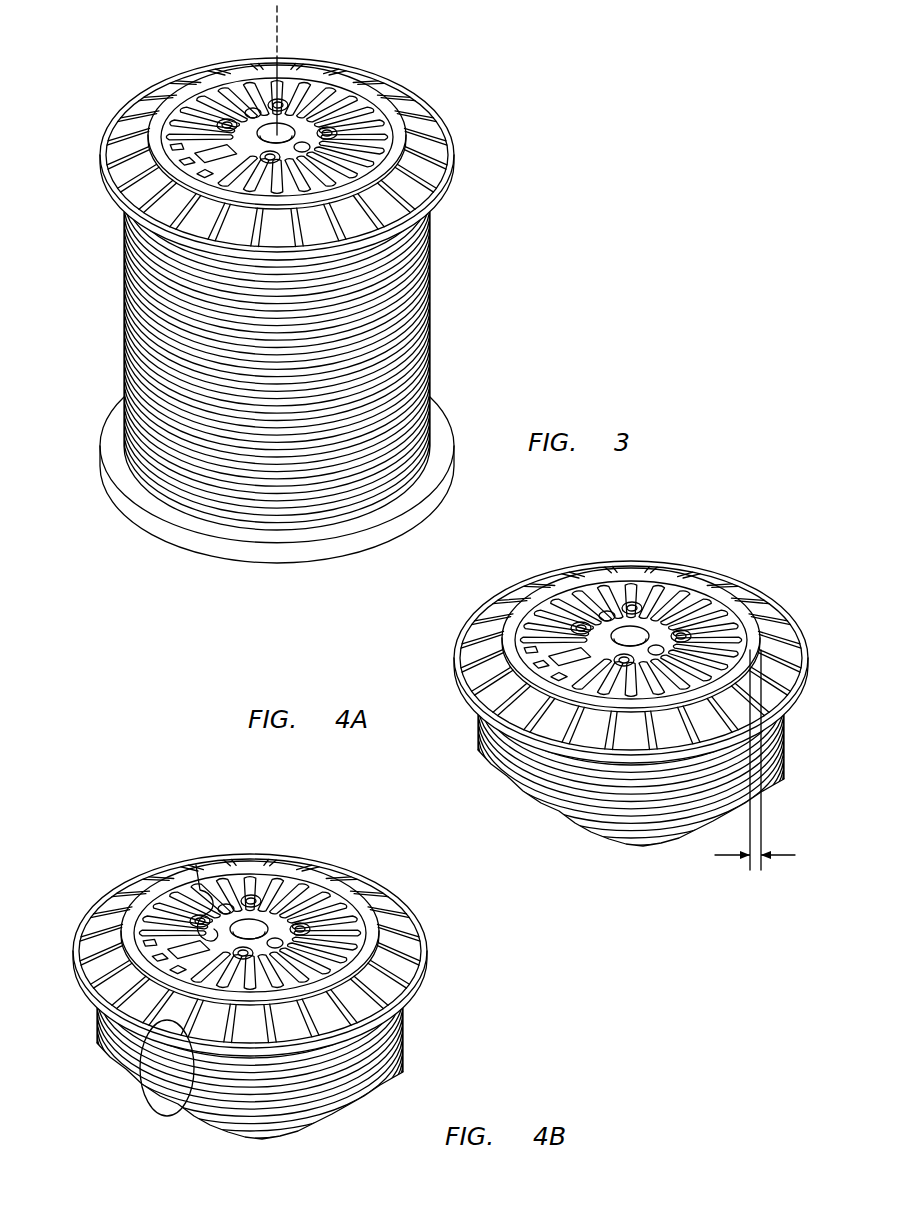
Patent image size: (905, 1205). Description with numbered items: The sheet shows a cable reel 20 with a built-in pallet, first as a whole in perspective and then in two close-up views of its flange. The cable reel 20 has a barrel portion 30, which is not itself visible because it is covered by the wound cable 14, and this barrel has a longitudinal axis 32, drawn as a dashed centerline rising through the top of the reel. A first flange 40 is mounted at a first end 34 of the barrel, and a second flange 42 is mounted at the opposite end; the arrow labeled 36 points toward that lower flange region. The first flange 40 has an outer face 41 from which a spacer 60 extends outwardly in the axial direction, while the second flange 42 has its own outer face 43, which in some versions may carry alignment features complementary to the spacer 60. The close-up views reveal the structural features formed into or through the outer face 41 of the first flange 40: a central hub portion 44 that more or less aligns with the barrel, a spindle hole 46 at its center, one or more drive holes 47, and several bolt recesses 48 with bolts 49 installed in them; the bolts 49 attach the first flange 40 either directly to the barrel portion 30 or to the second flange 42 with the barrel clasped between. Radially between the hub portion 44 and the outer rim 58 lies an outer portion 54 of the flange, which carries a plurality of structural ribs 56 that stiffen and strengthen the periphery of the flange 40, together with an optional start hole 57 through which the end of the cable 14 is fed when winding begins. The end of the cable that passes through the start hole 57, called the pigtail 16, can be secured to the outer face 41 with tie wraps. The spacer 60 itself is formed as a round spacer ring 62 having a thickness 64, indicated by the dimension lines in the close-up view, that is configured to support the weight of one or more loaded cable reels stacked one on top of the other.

In FIG. 3, the cable 14 is at (122, 340).
In FIG. 4A, the cable 14 is at (478, 750).
In FIG. 4B, the cable 14 is at (97, 1040).
In FIG. 4B, the pigtail 16 is at (196, 865).
In FIG. 3, the cable reel 20 is at (512, 93).
In FIG. 3, the barrel portion 30 is at (441, 303).
In FIG. 3, the longitudinal axis 32 is at (275, 24).
In FIG. 3, the first end 34 is at (471, 214).
In FIG. 3, the second flange 36 is at (470, 408).
In FIG. 3, the first flange 40 is at (100, 176).
In FIG. 4A, the first flange 40 is at (773, 602).
In FIG. 4B, the first flange 40 is at (390, 896).
In FIG. 3, the outer face 41 is at (429, 128).
In FIG. 3, the second flange 42 is at (100, 455).
In FIG. 3, the outer face 43 is at (138, 535).
In FIG. 4A, the central hub portion 44 is at (591, 605).
In FIG. 4B, the central hub portion 44 is at (230, 903).
In FIG. 4A, the spindle hole 46 is at (631, 624).
In FIG. 4B, the spindle hole 46 is at (253, 914).
In FIG. 4A, the drive hole 47 is at (607, 609).
In FIG. 4B, the drive hole 47 is at (278, 906).
In FIG. 4A, the bolt recess 48 is at (555, 610).
In FIG. 4A, the bolt 49 is at (681, 628).
In FIG. 4B, the bolt 49 is at (300, 921).
In FIG. 4B, the outer portion 54 is at (391, 974).
In FIG. 4B, the structural rib 56 is at (170, 1112).
In FIG. 4A, the start hole 57 is at (553, 651).
In FIG. 4B, the start hole 57 is at (175, 942).
In FIG. 4A, the outer rim 58 is at (806, 700).
In FIG. 4B, the outer rim 58 is at (424, 990).
In FIG. 3, the spacer 60 is at (202, 78).
In FIG. 4A, the spacer 60 is at (719, 587).
In FIG. 4B, the spacer 60 is at (335, 880).
In FIG. 4A, the spacer ring 62 is at (553, 580).
In FIG. 4B, the spacer ring 62 is at (145, 885).
In FIG. 4A, the thickness 64 is at (752, 868).